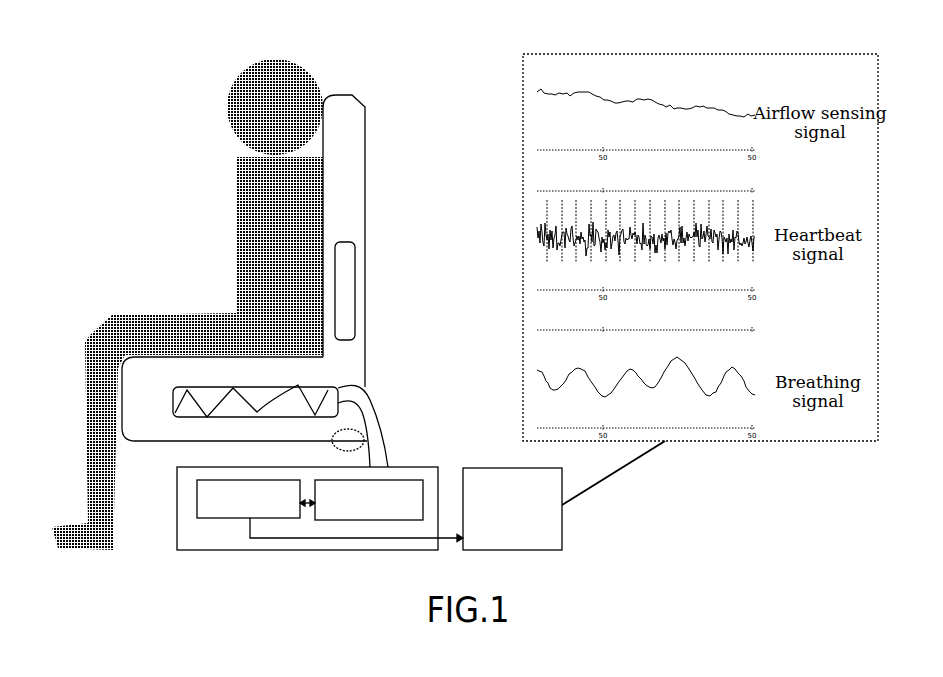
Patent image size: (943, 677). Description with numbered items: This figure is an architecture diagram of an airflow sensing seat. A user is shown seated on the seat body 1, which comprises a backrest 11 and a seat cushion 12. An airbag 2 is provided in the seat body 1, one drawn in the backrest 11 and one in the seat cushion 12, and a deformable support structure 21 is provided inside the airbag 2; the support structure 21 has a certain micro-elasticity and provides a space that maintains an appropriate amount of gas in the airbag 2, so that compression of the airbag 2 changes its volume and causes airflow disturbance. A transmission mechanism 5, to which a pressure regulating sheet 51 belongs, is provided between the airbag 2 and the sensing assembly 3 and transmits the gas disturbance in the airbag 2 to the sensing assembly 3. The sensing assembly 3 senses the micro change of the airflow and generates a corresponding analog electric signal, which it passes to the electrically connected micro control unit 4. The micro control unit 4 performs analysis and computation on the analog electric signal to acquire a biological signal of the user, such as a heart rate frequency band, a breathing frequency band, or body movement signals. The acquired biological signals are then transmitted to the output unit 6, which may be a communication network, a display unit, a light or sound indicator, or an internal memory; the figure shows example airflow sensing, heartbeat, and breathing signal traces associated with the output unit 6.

The seat body 1 is at (287, 268).
The backrest 11 is at (367, 145).
The seat cushion 12 is at (287, 373).
The airbag 2 is at (347, 300).
The support structure 21 is at (323, 387).
The sensing assembly 3 is at (418, 467).
The micro control unit 4 is at (197, 496).
The transmission mechanism 5 is at (372, 405).
The pressure regulating sheet 51 is at (352, 442).
The output unit 6 is at (565, 530).